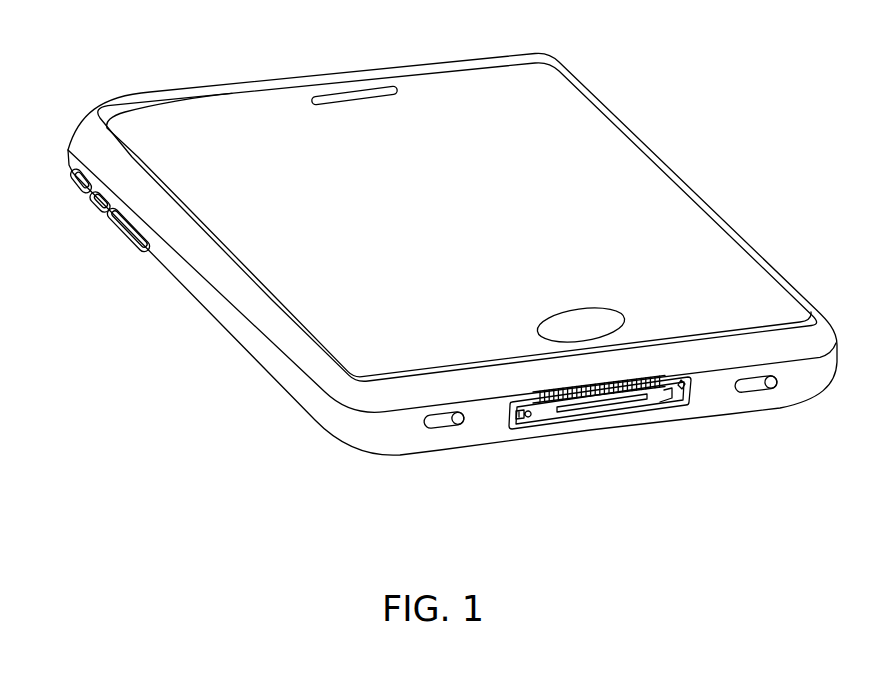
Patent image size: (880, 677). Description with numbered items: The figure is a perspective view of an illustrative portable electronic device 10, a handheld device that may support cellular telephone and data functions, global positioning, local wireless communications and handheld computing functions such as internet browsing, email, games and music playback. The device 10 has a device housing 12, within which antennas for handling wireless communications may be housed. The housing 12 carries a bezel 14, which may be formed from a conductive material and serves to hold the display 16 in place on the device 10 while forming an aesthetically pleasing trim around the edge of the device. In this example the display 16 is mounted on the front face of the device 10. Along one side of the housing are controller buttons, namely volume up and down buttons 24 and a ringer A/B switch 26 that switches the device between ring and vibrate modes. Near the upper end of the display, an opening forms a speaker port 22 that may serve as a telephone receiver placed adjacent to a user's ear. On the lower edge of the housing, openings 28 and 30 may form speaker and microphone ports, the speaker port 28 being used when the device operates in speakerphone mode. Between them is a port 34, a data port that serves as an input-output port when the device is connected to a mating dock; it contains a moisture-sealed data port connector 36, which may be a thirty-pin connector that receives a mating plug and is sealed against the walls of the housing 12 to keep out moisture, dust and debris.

The portable electronic device 10 is at (719, 86).
The device housing 12 is at (272, 367).
The bezel 14 is at (776, 278).
The display 16 is at (255, 123).
The speaker port 22 is at (358, 100).
The volume up and down buttons 24 is at (115, 213).
The ringer A/B switch 26 is at (78, 186).
The speaker port 28 is at (441, 425).
The opening 30 is at (755, 388).
The port 34 is at (670, 407).
The moisture-sealed data port connector 36 is at (595, 403).